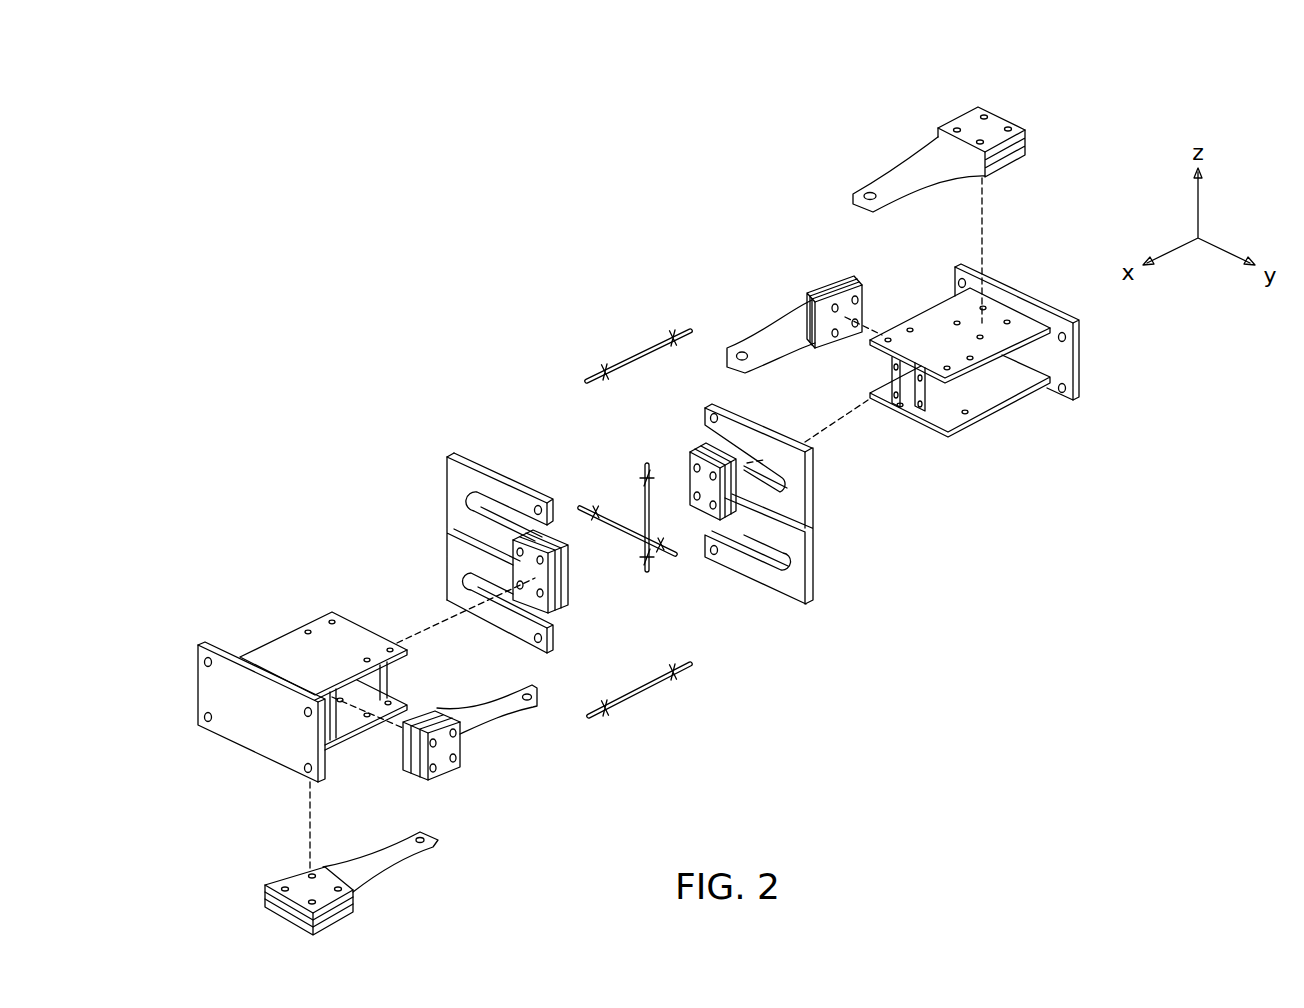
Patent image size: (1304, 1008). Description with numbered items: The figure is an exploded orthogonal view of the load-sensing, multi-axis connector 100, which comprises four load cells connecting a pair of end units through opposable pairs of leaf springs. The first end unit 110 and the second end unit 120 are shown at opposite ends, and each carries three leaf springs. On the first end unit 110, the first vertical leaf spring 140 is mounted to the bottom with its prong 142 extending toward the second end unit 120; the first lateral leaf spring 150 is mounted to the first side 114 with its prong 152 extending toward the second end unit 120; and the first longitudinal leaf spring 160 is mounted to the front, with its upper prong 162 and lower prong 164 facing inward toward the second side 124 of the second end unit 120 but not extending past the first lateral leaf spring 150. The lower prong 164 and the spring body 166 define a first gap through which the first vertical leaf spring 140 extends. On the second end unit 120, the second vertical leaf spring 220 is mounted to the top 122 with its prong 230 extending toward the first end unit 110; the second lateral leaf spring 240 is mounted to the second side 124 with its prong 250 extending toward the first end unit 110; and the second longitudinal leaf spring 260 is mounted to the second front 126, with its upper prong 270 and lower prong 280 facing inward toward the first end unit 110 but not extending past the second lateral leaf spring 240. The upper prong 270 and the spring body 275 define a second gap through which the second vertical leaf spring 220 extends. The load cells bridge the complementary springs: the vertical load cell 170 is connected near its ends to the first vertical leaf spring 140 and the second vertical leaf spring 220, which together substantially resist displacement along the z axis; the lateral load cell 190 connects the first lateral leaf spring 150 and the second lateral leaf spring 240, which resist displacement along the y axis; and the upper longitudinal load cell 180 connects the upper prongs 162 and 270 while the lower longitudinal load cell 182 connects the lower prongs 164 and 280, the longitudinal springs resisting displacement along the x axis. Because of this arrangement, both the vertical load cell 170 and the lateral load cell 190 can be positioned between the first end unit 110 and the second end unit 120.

The load-sensing, multi-axis connector 100 is at (424, 258).
The first end unit 110 is at (302, 679).
The first side 114 is at (332, 708).
The second end unit 120 is at (1021, 383).
The top 122 is at (977, 362).
The second side 124 is at (965, 388).
The second front 126 is at (922, 402).
The first vertical leaf spring 140 is at (388, 883).
The prong 142 is at (428, 855).
The first lateral leaf spring 150 is at (499, 732).
The prong 152 is at (508, 723).
The first longitudinal leaf spring 160 is at (515, 537).
The upper prong 162 is at (505, 477).
The lower prong 164 is at (515, 635).
The spring body 166 is at (572, 572).
The vertical load cell 170 is at (642, 507).
The upper longitudinal load cell 180 is at (633, 358).
The lower longitudinal load cell 182 is at (633, 698).
The lateral load cell 190 is at (583, 503).
The second vertical leaf spring 220 is at (931, 127).
The prong 230 is at (880, 180).
The second lateral leaf spring 240 is at (786, 293).
The prong 250 is at (753, 335).
The second longitudinal leaf spring 260 is at (784, 511).
The upper prong 270 is at (757, 425).
The spring body 275 is at (695, 450).
The lower prong 280 is at (732, 570).